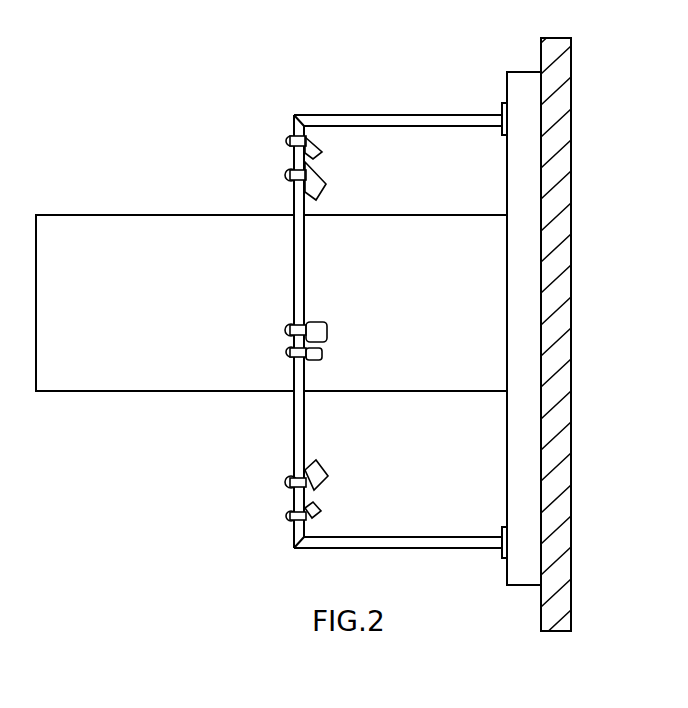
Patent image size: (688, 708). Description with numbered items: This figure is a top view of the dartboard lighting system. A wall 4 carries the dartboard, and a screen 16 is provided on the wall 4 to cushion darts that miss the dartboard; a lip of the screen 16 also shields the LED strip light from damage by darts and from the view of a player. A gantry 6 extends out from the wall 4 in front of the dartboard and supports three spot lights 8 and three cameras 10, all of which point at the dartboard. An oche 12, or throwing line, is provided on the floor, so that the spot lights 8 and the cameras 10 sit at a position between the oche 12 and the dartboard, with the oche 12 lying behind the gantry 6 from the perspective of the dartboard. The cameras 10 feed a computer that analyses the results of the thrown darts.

The wall 4 is at (558, 73).
The screen 16 is at (527, 87).
The gantry 6 is at (370, 120).
The oche 12 is at (33, 240).
The spot lights 8 is at (325, 184).
The cameras 10 is at (318, 152).